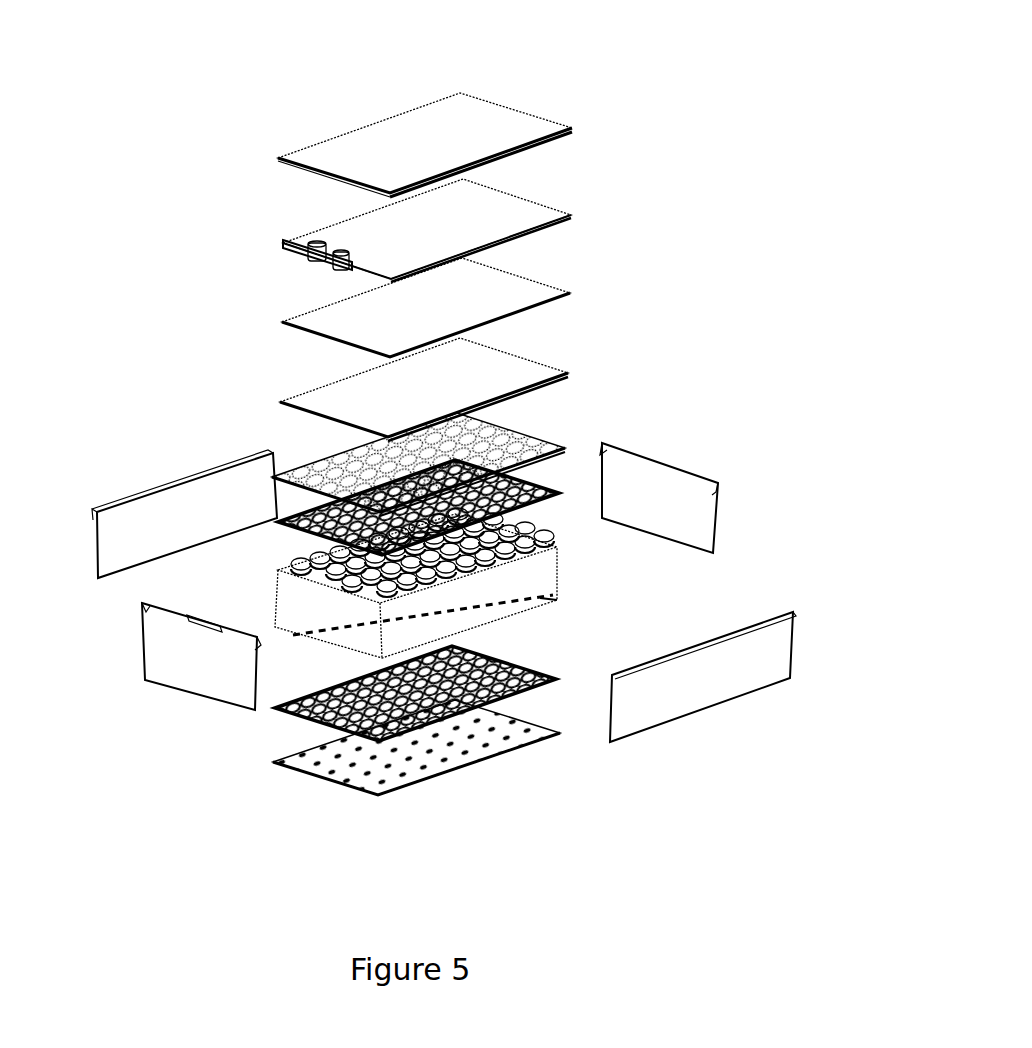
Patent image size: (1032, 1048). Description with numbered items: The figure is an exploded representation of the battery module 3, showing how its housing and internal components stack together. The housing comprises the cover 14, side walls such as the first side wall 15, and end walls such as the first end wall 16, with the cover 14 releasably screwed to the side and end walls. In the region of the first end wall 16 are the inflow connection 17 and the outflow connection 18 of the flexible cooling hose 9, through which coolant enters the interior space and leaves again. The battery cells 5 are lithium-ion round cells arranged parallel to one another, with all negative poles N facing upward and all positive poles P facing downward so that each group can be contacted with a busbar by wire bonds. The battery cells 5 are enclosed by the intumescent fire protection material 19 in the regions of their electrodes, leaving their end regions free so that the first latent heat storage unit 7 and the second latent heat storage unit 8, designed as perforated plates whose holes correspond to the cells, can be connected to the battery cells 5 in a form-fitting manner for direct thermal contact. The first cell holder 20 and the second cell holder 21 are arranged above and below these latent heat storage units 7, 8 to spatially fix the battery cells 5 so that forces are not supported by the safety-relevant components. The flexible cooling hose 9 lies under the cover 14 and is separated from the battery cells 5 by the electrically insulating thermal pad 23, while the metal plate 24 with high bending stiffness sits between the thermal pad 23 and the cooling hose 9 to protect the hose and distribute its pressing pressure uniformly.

The battery module 3 is at (163, 60).
The cover 14 is at (573, 130).
The flexible cooling hose 9 is at (570, 213).
The inflow connection 17 is at (280, 238).
The outflow connection 18 is at (307, 258).
The metal plate 24 is at (567, 293).
The electrically insulating thermal pad 23 is at (563, 372).
The first cell holder 20 is at (543, 438).
The first latent heat storage unit 7 is at (280, 527).
The battery cells 5 is at (560, 549).
The negative poles N is at (520, 523).
The positive poles P is at (557, 600).
The intumescent fire protection material 19 is at (398, 632).
The first end wall 16 is at (183, 693).
The second latent heat storage unit 8 is at (283, 717).
The second cell holder 21 is at (420, 783).
The first side wall 15 is at (750, 693).